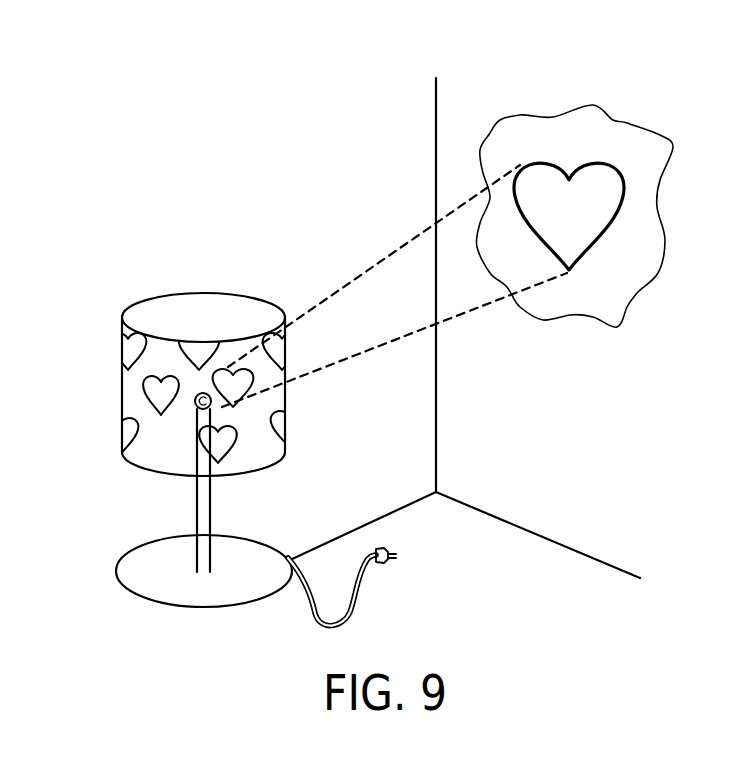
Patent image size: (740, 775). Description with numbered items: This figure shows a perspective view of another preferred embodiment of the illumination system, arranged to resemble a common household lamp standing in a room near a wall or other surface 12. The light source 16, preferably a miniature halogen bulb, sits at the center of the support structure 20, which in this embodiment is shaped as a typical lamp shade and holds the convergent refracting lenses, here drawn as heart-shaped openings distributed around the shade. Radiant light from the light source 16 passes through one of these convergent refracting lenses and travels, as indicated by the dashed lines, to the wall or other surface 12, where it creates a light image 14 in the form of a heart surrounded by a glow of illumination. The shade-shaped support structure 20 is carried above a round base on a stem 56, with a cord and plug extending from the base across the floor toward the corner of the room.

The wall or other surface 12 is at (615, 254).
The light image 14 is at (601, 173).
The light source 16 is at (197, 393).
The support structure 20 is at (165, 353).
The lamp stem 56 is at (190, 504).